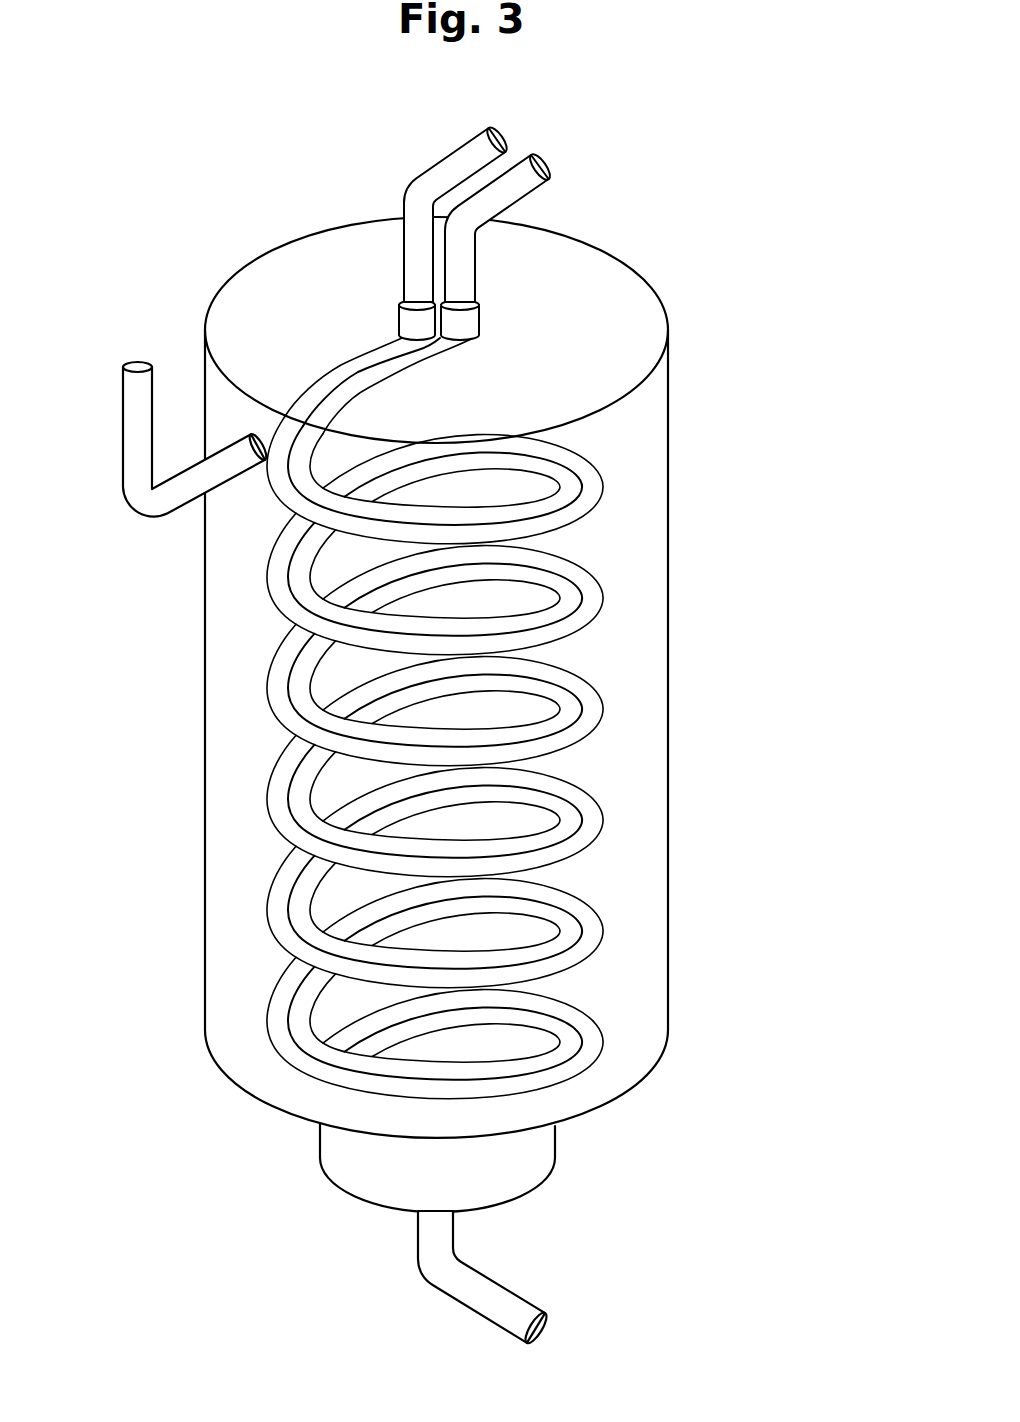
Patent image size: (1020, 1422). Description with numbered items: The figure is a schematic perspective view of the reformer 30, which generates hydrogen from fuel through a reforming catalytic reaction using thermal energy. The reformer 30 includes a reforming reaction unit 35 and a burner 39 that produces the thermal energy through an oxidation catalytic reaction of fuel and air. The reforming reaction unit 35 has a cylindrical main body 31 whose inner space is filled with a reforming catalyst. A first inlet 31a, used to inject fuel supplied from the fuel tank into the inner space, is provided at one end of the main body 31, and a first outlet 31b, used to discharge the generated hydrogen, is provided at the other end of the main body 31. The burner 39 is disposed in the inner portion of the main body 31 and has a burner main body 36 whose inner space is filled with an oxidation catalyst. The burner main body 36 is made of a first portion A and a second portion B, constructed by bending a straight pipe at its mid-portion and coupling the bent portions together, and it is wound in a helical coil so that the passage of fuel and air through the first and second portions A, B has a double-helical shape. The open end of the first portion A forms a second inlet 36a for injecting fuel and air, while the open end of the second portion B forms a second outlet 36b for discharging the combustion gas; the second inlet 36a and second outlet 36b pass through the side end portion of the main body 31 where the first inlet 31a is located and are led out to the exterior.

The reformer 30 is at (448, 117).
The main body 31 is at (474, 714).
The first inlet 31a is at (247, 485).
The first outlet 31b is at (394, 1226).
The reforming reaction unit 35 is at (678, 532).
The burner main body 36 is at (462, 612).
The second inlet 36a is at (385, 290).
The second outlet 36b is at (490, 291).
The burner 39 is at (436, 718).
The first portion A is at (600, 585).
The second portion B is at (578, 604).